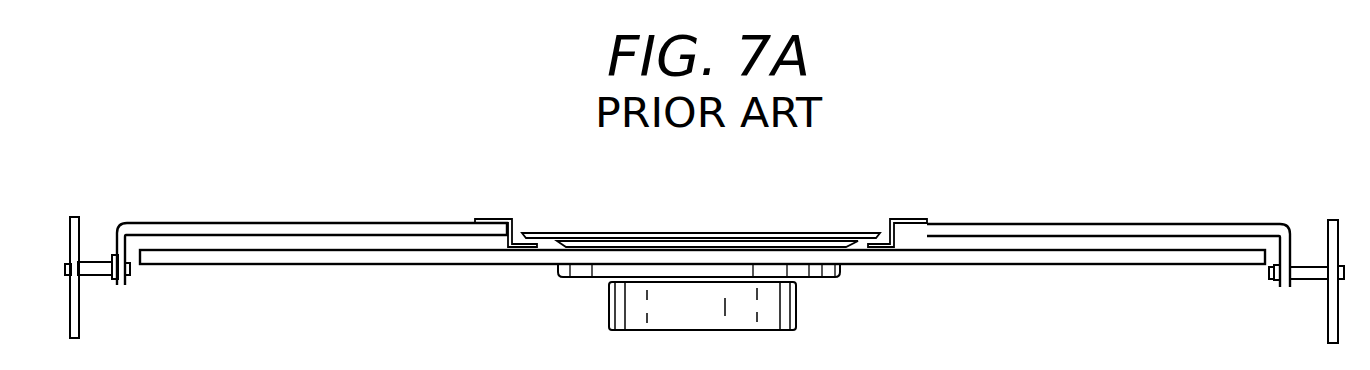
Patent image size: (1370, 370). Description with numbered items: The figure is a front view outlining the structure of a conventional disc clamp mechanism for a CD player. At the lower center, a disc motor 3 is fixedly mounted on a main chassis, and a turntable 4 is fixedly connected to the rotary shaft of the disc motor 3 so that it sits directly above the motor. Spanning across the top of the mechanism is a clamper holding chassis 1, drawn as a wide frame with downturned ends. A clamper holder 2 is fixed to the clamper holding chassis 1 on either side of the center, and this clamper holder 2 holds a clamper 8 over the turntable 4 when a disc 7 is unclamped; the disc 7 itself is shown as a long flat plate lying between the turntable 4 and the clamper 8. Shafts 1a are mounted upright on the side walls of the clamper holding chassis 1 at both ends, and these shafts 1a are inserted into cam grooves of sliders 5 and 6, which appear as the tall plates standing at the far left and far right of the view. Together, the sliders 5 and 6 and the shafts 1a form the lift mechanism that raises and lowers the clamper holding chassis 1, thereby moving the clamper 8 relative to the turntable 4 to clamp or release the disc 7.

The clamper holding chassis 1 is at (335, 223).
The shaft 1a is at (94, 262).
The clamper holder 2 is at (514, 221).
The disc motor 3 is at (787, 308).
The turntable 4 is at (838, 273).
The slider 5 is at (78, 312).
The slider 6 is at (1328, 325).
The disc 7 is at (443, 259).
The clamper 8 is at (796, 232).